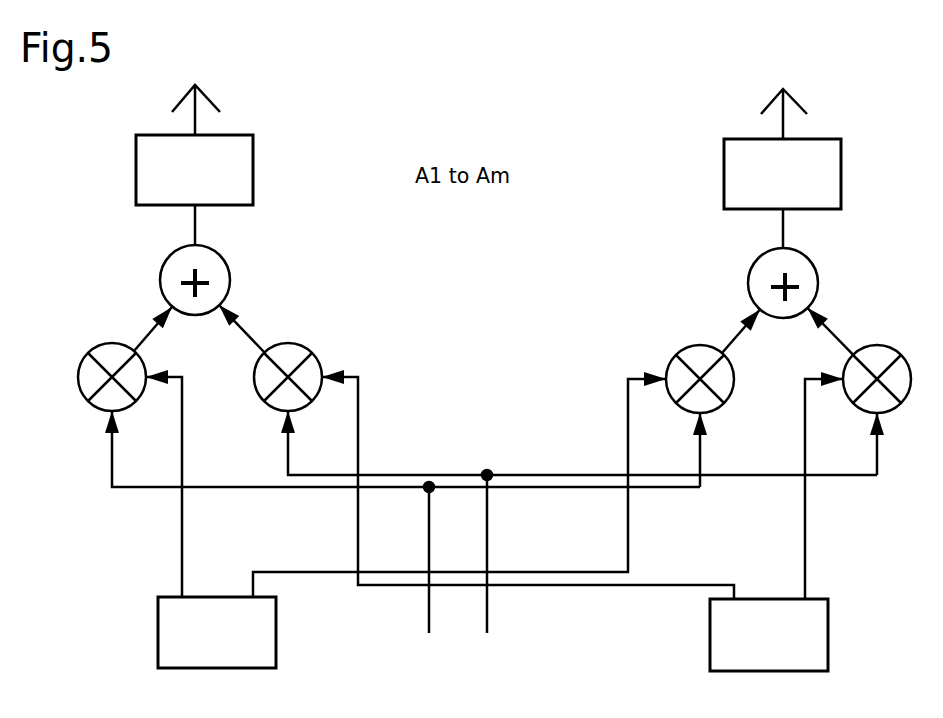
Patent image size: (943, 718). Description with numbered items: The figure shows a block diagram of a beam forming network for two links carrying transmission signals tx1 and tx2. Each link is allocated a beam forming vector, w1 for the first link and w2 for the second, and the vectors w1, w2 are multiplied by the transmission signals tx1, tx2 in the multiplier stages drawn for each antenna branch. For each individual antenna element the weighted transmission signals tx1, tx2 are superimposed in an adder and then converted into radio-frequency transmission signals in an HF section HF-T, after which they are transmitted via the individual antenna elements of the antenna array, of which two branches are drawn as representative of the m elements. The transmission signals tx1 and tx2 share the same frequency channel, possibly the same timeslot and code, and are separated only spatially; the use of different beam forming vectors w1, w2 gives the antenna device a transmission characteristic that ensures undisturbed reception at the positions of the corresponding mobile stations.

The HF section HF-T is at (488, 172).
The beam forming vector w1 is at (406, 522).
The beam forming vector w2 is at (582, 524).
The transmission signal tx1 is at (406, 549).
The transmission signal tx2 is at (582, 549).